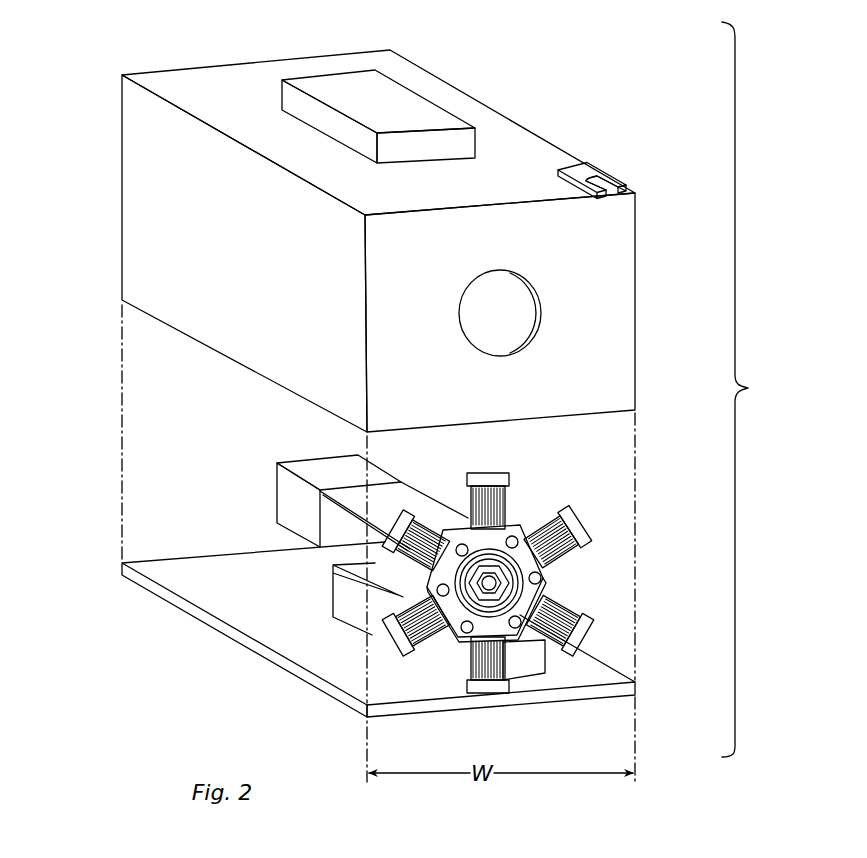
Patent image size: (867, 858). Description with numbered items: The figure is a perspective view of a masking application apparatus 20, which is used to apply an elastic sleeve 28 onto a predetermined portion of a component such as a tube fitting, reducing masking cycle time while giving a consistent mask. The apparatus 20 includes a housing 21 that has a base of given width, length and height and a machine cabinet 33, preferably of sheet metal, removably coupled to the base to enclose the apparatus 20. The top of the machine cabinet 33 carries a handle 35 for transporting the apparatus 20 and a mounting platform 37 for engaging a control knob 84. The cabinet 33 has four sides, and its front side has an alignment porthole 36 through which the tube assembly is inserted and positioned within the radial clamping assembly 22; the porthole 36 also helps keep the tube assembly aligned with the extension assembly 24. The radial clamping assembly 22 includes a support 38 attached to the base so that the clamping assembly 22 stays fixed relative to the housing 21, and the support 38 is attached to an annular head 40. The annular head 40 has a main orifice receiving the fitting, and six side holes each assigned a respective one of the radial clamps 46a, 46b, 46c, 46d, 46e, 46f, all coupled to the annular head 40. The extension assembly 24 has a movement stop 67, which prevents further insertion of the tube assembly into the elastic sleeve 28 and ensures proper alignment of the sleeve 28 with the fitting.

The masking application apparatus 20 is at (118, 637).
The housing 21 is at (661, 211).
The radial clamping assembly 22 is at (603, 521).
The extension assembly 24 is at (298, 453).
The elastic sleeve 28 is at (502, 583).
The machine cabinet 33 is at (637, 306).
The handle 35 is at (318, 75).
The alignment porthole 36 is at (459, 331).
The mounting platform 37 is at (602, 170).
The support 38 is at (545, 663).
The annular head 40 is at (520, 525).
The radial clamp 46a is at (580, 542).
The radial clamp 46b is at (586, 620).
The radial clamp 46c is at (487, 693).
The radial clamp 46d is at (392, 640).
The radial clamp 46e is at (382, 544).
The radial clamp 46f is at (507, 478).
The movement stop 67 is at (487, 598).
The control knob 84 is at (563, 170).